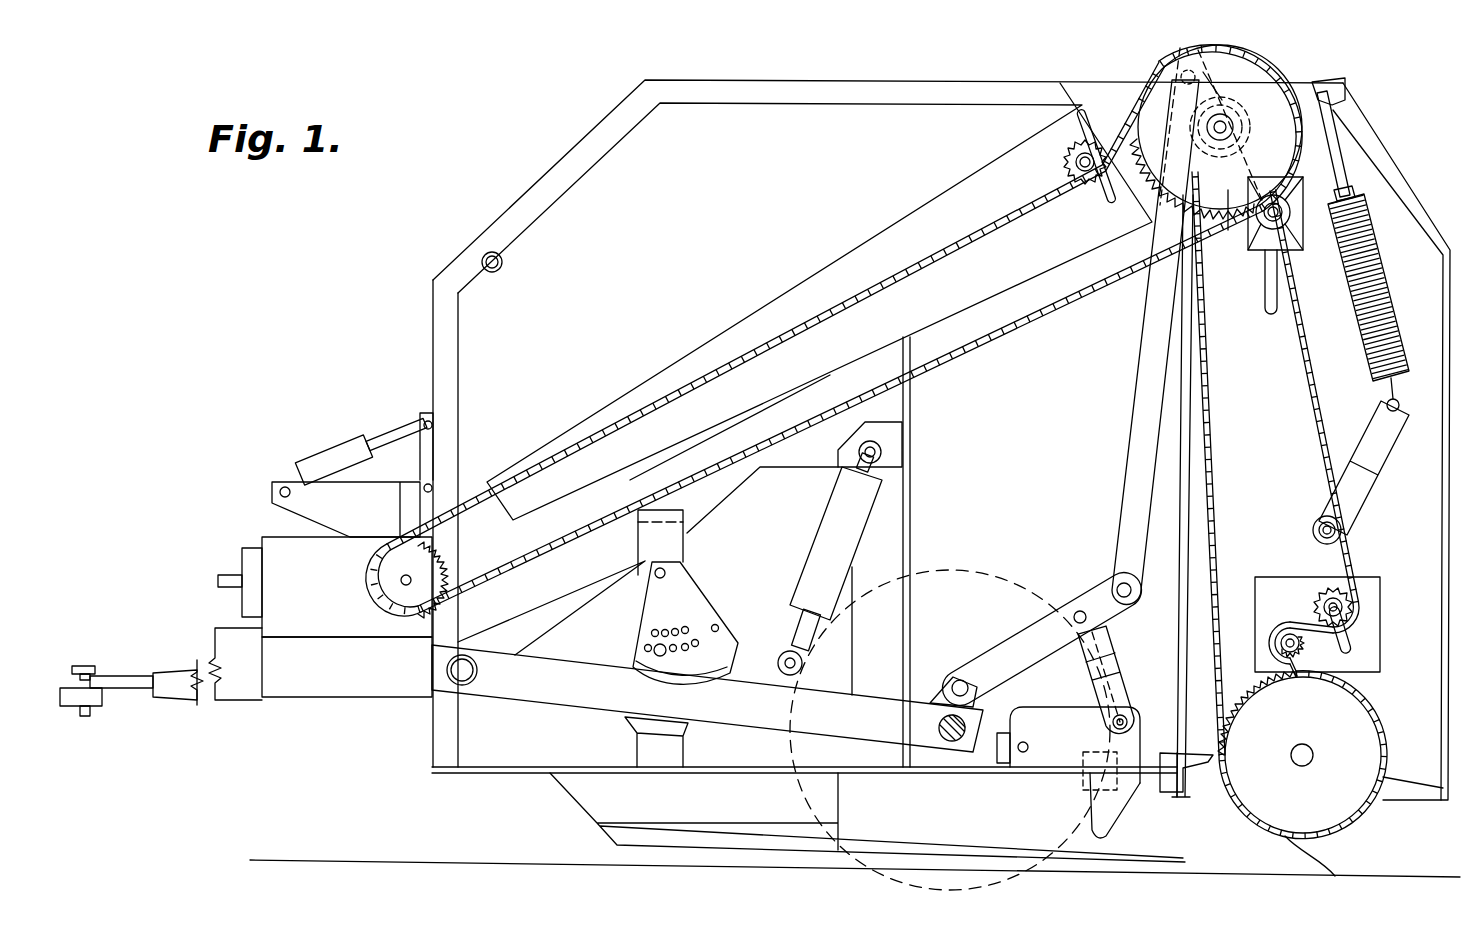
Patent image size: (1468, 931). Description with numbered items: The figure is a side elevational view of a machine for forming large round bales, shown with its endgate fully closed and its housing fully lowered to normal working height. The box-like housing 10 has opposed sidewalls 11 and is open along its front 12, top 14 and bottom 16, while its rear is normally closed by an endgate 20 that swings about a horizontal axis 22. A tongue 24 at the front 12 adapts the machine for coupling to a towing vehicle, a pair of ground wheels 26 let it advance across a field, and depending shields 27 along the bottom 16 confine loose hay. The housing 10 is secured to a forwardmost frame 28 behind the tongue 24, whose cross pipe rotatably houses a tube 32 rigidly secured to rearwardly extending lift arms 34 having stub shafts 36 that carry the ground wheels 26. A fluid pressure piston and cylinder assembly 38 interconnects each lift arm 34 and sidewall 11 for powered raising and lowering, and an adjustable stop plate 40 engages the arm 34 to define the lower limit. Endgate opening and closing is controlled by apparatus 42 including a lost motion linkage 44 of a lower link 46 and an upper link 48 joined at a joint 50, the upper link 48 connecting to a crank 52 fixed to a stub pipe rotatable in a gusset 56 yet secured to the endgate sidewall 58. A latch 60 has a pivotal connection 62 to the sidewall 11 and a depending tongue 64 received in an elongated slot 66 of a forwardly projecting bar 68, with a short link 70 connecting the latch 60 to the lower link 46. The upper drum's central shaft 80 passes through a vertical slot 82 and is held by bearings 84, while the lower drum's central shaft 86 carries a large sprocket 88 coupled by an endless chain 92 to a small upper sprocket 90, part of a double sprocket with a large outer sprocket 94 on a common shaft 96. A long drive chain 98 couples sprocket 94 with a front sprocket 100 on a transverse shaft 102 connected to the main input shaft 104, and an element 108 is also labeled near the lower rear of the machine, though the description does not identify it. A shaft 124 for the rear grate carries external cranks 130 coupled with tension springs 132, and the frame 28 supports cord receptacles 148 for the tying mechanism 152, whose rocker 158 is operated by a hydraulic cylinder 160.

The housing 10 is at (586, 152).
The sidewalls 11 is at (708, 112).
The front 12 is at (432, 300).
The top 14 is at (935, 80).
The bottom 16 is at (470, 772).
The endgate 20 is at (1385, 158).
The horizontal axis 22 is at (1224, 121).
The tongue 24 is at (168, 694).
The ground wheels 26 is at (965, 572).
The shields 27 is at (585, 793).
The frame 28 is at (326, 690).
The tube 32 is at (470, 660).
The lift arms 34 is at (545, 690).
The stub shafts 36 is at (945, 722).
The fluid pressure piston and cylinder assembly 38 is at (840, 515).
The adjustable stop plate 40 is at (700, 600).
The apparatus 42 is at (1115, 632).
The lost motion linkage 44 is at (1118, 403).
The lower link 46 is at (1005, 658).
The upper link 48 is at (1145, 325).
The joint 50 is at (1113, 572).
The crank 52 is at (1213, 58).
The gusset 56 is at (1330, 88).
The sidewall of endgate 58 is at (1418, 237).
The latch 60 is at (1058, 770).
The pivotal connection 62 is at (1020, 752).
The tongue 64 is at (1110, 812).
The elongated slot 66 is at (1183, 772).
The bar 68 is at (1190, 797).
The short link 70 is at (1094, 674).
The central shaft 80 is at (1300, 238).
The slot 82 is at (1268, 298).
The bearings 84 is at (1286, 204).
The central shaft 86 is at (1302, 766).
The large sprocket 88 is at (1360, 725).
The small upper sprocket 90 is at (1250, 142).
The endless chain 92 is at (1218, 440).
The large outer sprocket 94 is at (1225, 224).
The common shaft 96 is at (1212, 132).
The drive chain 98 is at (912, 262).
The sprocket 100 is at (385, 578).
The transverse shaft 102 is at (400, 588).
The input shaft 104 is at (240, 578).
The tail guide 108 is at (1350, 855).
The shaft 124 is at (1325, 528).
The external cranks 130 is at (1368, 485).
The tension springs 132 is at (1368, 340).
The receptacles 148 is at (265, 595).
The tying mechanism 152 is at (330, 444).
The rocker 158 is at (392, 436).
The hydraulic cylinder 160 is at (325, 465).